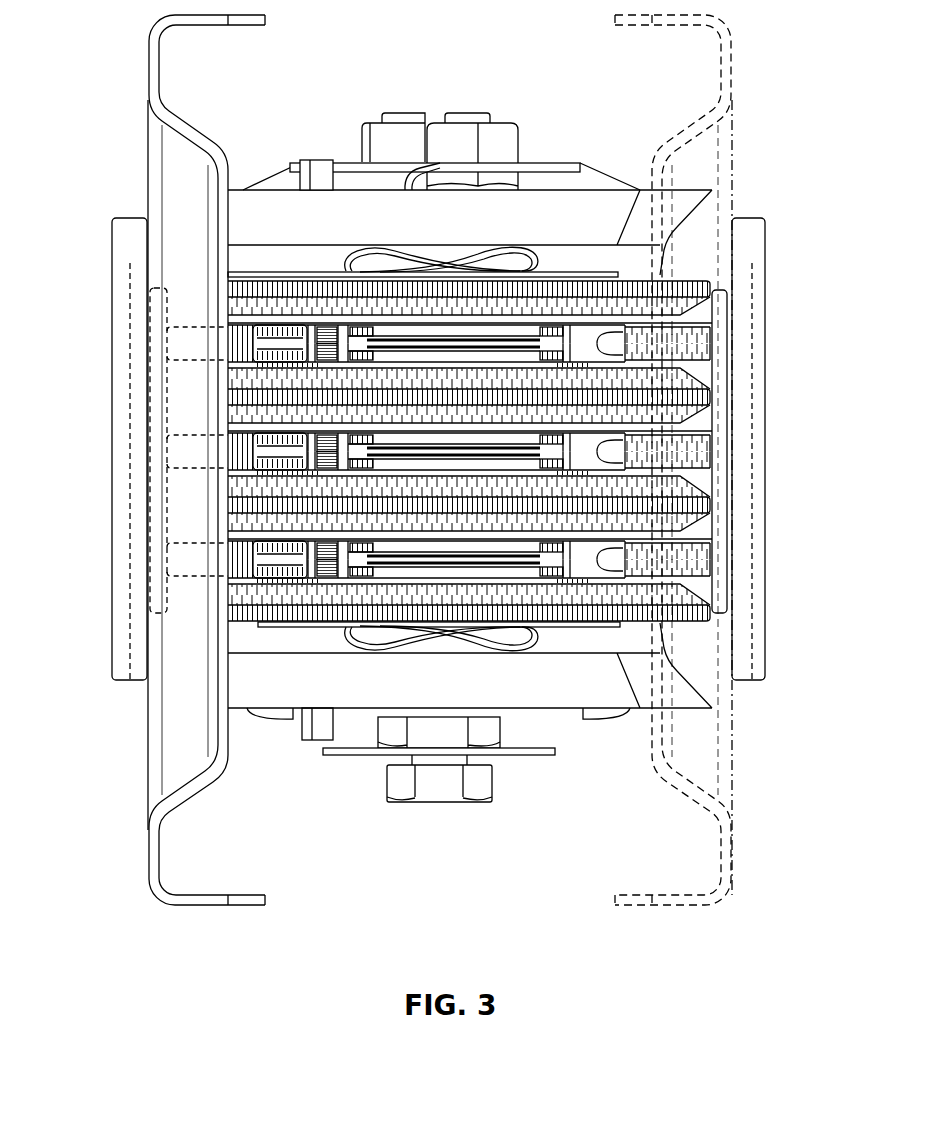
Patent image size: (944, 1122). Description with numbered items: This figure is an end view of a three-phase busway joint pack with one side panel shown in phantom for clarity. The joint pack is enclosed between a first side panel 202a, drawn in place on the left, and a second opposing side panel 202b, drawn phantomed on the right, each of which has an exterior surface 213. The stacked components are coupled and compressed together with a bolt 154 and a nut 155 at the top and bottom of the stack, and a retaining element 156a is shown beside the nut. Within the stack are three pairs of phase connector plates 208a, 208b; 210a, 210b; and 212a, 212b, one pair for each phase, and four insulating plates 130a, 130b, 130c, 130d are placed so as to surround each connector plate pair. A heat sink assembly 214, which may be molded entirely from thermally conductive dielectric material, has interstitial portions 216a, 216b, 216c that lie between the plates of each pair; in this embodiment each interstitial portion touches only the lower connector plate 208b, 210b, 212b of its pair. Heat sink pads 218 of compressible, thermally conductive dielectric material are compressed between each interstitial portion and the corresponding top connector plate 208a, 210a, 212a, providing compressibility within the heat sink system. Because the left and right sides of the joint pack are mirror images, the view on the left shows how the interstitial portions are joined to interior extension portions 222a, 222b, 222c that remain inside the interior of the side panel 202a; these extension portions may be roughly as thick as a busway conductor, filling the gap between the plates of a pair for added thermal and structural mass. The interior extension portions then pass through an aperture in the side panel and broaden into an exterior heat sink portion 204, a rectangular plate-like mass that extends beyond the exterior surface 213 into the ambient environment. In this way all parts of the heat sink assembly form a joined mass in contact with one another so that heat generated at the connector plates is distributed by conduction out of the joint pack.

The first side panel 202a is at (149, 52).
The second opposing side panel 202b is at (732, 50).
The exterior heat sink portion 204 is at (112, 240).
The nut 155 is at (511, 123).
The retaining strap 156a is at (596, 170).
The bolt 154 is at (477, 795).
The exterior surface 213 is at (147, 712).
The heat sink assembly 214 is at (743, 716).
The insulating plate 130a is at (702, 296).
The insulating plate 130b is at (702, 401).
The insulating plate 130c is at (702, 509).
The insulating plate 130d is at (702, 617).
The interstitial portion 216a is at (708, 380).
The interstitial portion 216b is at (708, 490).
The interstitial portion 216c is at (708, 600).
The heat sink pads 218 is at (800, 539).
The phase connector plate 208a is at (277, 321).
The phase connector plate 208b is at (263, 364).
The phase connector plate 210a is at (277, 430).
The phase connector plate 210b is at (263, 471).
The phase connector plate 212a is at (277, 538).
The phase connector plate 212b is at (263, 579).
The interior extension portion 222a is at (243, 340).
The interior extension portion 222b is at (243, 448).
The interior extension portion 222c is at (243, 556).